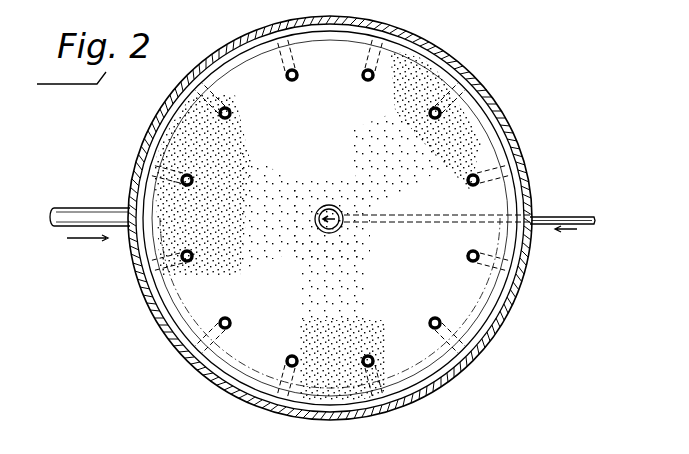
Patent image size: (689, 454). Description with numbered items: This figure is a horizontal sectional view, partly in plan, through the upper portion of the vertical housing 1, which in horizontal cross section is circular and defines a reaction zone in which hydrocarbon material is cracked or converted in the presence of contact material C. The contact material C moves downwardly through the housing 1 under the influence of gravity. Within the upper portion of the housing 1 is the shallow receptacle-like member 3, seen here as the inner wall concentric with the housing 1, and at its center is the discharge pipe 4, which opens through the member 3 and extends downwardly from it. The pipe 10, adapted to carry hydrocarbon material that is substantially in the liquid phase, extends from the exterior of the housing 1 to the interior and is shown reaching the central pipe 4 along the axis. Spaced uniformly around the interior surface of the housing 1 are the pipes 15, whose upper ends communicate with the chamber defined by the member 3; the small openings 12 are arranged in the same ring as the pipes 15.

The vertical housing 1 is at (521, 167).
The receptacle-like member 3 is at (470, 302).
The central discharge pipe 4 is at (325, 205).
The pipe 10 is at (549, 218).
The nozzles 12 is at (289, 81).
The pipes 15 is at (439, 118).
The contact material C is at (183, 148).